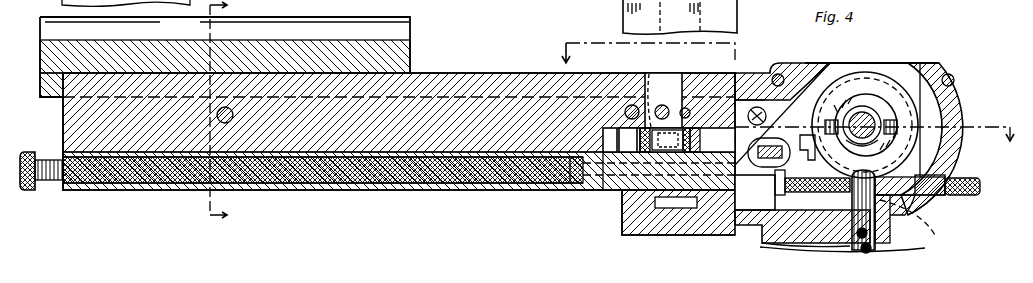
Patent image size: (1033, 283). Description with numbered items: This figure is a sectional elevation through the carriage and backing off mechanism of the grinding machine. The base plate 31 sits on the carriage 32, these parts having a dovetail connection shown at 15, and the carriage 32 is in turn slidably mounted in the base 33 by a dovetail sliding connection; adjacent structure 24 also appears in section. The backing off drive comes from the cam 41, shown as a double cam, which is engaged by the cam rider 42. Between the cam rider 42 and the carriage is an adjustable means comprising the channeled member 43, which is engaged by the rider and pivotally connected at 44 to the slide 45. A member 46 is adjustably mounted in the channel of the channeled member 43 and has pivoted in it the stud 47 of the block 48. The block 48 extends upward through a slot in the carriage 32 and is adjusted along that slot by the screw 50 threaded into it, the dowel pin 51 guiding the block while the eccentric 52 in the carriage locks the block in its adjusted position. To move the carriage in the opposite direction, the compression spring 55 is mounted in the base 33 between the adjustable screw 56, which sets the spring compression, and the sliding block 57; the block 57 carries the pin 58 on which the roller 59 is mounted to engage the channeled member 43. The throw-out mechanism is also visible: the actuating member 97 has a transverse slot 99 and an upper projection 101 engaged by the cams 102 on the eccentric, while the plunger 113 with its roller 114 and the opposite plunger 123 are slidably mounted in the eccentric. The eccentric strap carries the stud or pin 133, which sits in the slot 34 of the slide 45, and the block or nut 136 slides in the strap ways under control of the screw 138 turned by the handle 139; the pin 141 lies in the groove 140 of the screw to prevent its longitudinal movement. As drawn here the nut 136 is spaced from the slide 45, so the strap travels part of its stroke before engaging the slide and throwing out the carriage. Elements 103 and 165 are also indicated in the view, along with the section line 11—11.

The section line 11- 11 is at (788, 82).
The dovetail connection 15 is at (230, 113).
The frame member 24 is at (735, 18).
The base plate 31 is at (404, 50).
The carriage 32 is at (418, 85).
The base 33 is at (426, 190).
The slot 34 is at (762, 150).
The cam 41 is at (842, 78).
The cam rider 42 is at (766, 112).
The channeled member 43 is at (692, 143).
The pivot connection 44 is at (621, 216).
The slide 45 is at (755, 192).
The member 46 is at (782, 114).
The stud 47 is at (661, 105).
The block 48 is at (652, 78).
The screw 50 is at (668, 108).
The dowel pin 51 is at (712, 92).
The eccentric 52 is at (631, 105).
The compression spring 55 is at (478, 191).
The adjustable screw 56 is at (56, 160).
The sliding block 57 is at (577, 192).
The pin 58 is at (607, 192).
The roller 59 is at (622, 134).
The actuating member 97 is at (930, 248).
The transverse slot 99 is at (802, 232).
The projection 101 is at (830, 193).
The cams 102 is at (815, 73).
The gear 103 is at (888, 100).
The plunger 113 is at (863, 119).
The roller 114 is at (900, 130).
The plunger 123 is at (863, 150).
The stud or pin 133 is at (780, 195).
The block or nut 136 is at (815, 161).
The screw 138 is at (887, 211).
The handle 139 is at (955, 178).
The groove 140 is at (902, 212).
The pin 141 is at (935, 178).
The pin 165 is at (806, 249).